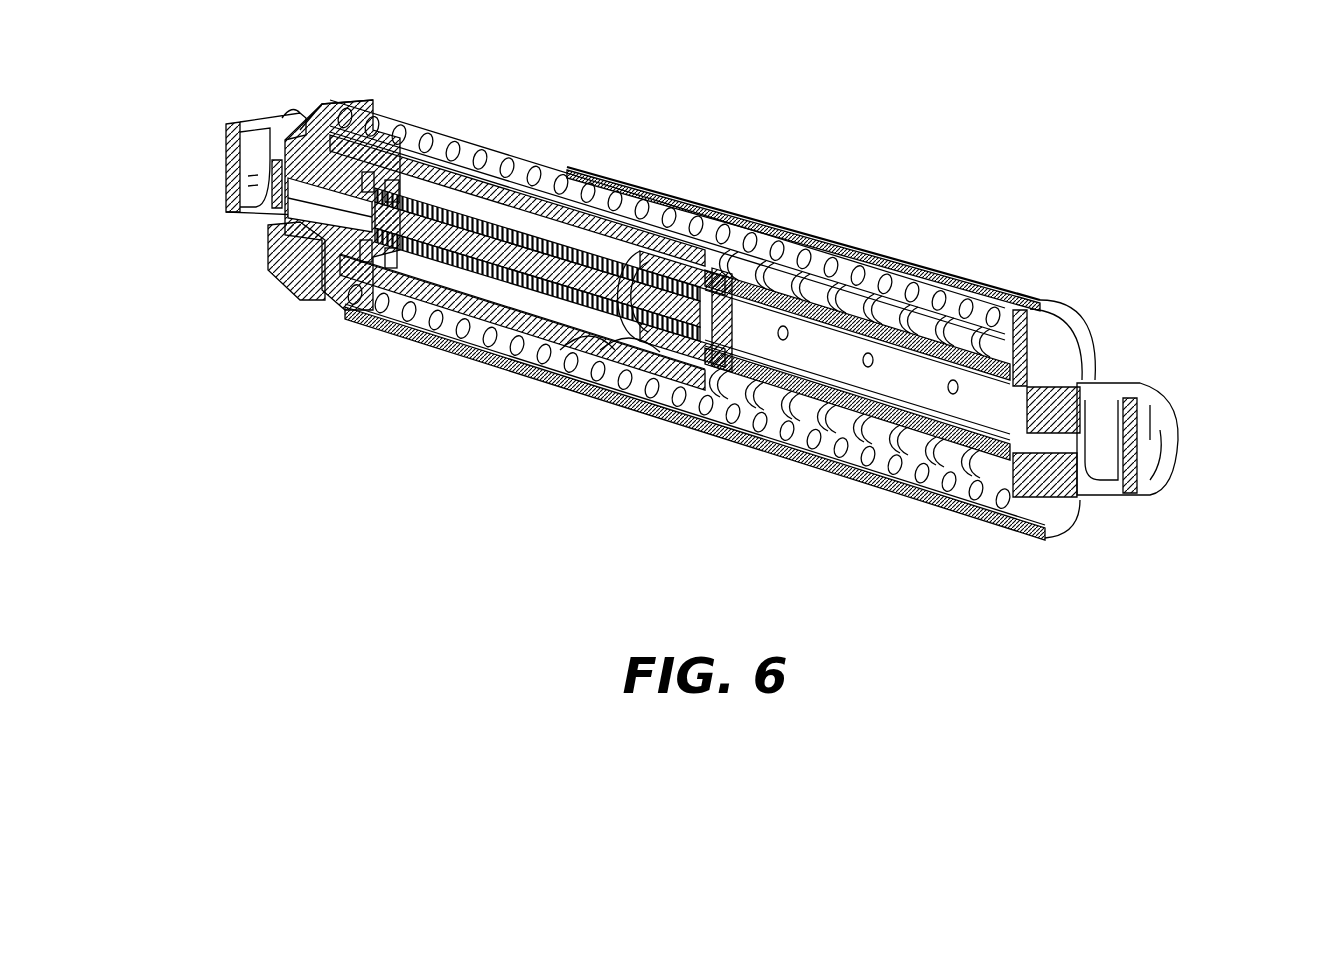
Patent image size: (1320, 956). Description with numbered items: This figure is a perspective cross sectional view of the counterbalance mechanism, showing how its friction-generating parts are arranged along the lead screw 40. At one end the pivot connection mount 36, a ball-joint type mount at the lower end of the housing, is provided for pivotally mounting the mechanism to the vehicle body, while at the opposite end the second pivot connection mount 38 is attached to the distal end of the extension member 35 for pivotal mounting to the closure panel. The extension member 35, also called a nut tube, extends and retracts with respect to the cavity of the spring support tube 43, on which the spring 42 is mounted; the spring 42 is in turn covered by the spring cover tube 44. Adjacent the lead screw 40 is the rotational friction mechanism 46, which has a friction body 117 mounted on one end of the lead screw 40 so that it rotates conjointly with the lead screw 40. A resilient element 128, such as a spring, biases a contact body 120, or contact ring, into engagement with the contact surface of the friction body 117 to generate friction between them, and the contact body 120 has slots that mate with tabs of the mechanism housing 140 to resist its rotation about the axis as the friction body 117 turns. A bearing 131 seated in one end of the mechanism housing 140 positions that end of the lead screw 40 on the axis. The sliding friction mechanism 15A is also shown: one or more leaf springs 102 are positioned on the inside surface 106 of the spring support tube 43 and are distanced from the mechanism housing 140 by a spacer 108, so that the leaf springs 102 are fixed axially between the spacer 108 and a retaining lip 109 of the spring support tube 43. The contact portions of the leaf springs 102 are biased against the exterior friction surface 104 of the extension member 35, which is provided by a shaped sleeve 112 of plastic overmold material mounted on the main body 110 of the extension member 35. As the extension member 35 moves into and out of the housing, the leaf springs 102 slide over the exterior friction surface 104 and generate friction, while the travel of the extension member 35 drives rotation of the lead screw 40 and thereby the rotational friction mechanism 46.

The sliding friction mechanism 15A is at (770, 262).
The extension member 35 is at (900, 335).
The pivot connection mount 36 is at (226, 143).
The second pivot connection mount 38 is at (1175, 440).
The lead screw 40 is at (517, 278).
The spring 42 is at (522, 152).
The spring support tube 43 is at (613, 358).
The spring cover tube 44 is at (1013, 298).
The rotational friction mechanism 46 is at (348, 118).
The leaf springs 102 is at (713, 262).
The exterior friction surface 104 is at (938, 375).
The inside surface 106 is at (670, 358).
The spacer 108 is at (530, 203).
The retaining lip 109 is at (800, 412).
The main body 110 is at (1030, 395).
The shaped sleeve 112 is at (950, 378).
The friction body 117 is at (373, 252).
The contact body 120 is at (357, 252).
The resilient element 128 is at (348, 240).
The bearing 131 is at (387, 270).
The mechanism housing 140 is at (314, 150).